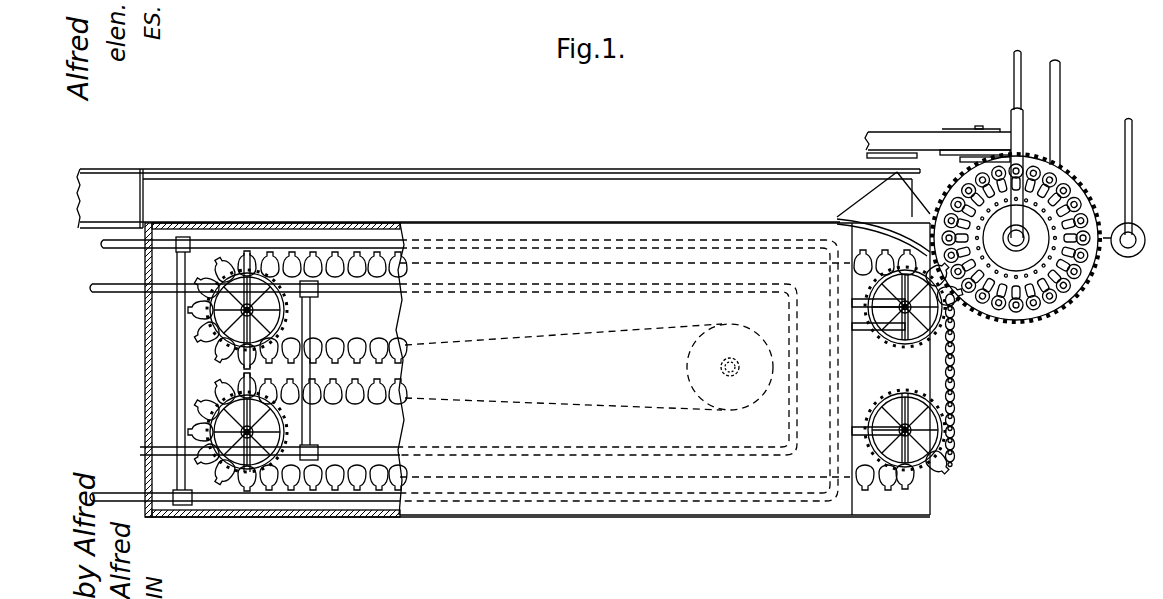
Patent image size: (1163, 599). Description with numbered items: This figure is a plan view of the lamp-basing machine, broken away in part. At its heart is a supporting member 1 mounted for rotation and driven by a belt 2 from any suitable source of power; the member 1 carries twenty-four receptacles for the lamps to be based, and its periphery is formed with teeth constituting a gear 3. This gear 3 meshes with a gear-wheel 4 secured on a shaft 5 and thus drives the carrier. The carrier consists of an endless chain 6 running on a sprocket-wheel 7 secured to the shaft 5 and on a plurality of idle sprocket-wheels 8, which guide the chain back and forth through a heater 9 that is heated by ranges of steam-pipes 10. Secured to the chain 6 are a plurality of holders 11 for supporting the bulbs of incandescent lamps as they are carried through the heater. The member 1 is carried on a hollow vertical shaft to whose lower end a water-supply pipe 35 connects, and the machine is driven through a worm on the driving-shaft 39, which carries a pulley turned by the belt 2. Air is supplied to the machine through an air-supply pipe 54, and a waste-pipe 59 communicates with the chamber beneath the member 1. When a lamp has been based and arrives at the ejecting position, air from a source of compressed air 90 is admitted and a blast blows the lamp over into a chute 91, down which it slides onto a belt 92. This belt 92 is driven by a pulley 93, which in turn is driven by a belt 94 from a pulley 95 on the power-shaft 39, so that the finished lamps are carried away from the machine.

The supporting member 1 is at (1060, 312).
The belt 2 is at (888, 138).
The gear 3 is at (1090, 278).
The gear-wheel 4 is at (917, 348).
The shaft 5 is at (905, 307).
The endless chain 6 is at (960, 368).
The sprocket-wheel 7 is at (885, 347).
The idle sprocket-wheels 8 is at (885, 398).
The heater 9 is at (430, 517).
The steam-pipes 10 is at (371, 438).
The holders 11 is at (958, 397).
The water-supply pipe 35 is at (1020, 87).
The driving-shaft 39 is at (980, 125).
The air-supply pipe 54 is at (1023, 140).
The waste-pipe 59 is at (1061, 128).
The source of compressed air 90 is at (1130, 255).
The chute 91 is at (883, 214).
The belt 92 is at (498, 198).
The pulley 93 is at (868, 160).
The belt 94 is at (945, 158).
The pulley 95 is at (962, 165).